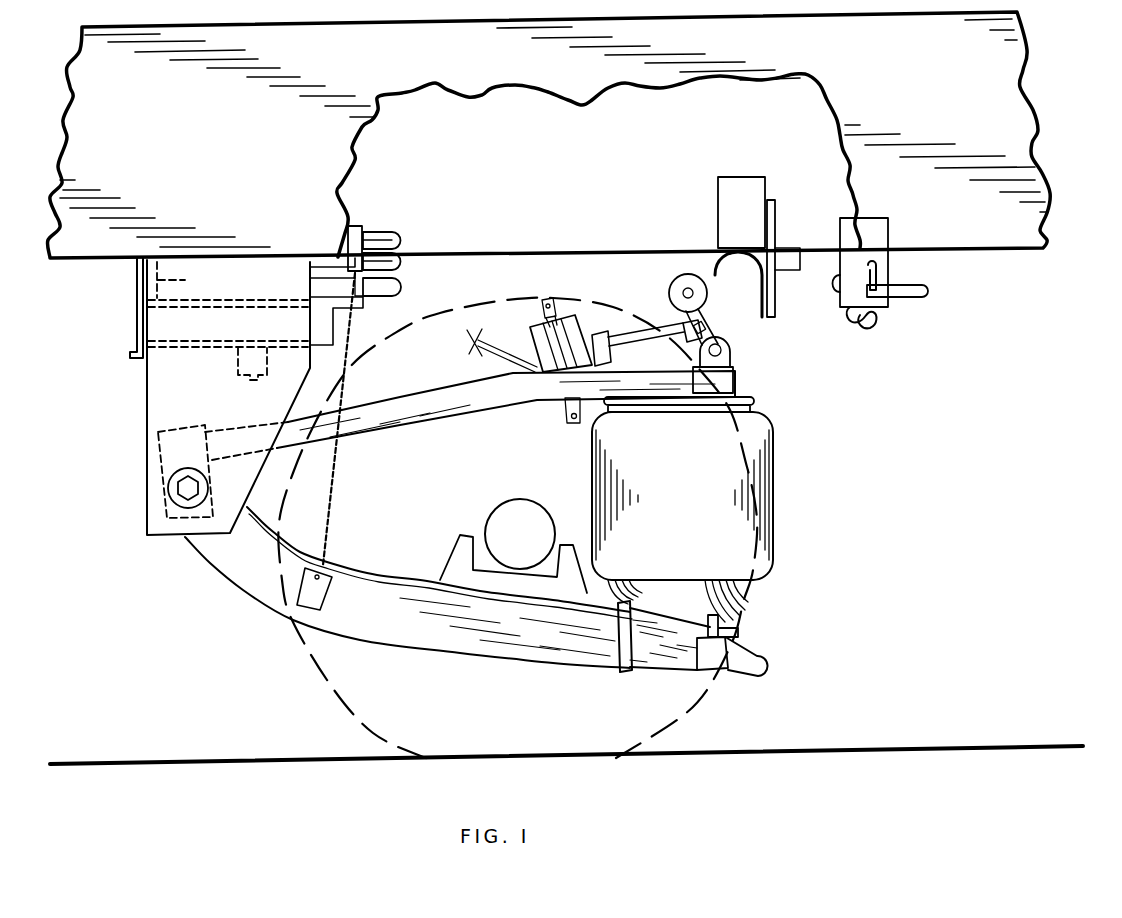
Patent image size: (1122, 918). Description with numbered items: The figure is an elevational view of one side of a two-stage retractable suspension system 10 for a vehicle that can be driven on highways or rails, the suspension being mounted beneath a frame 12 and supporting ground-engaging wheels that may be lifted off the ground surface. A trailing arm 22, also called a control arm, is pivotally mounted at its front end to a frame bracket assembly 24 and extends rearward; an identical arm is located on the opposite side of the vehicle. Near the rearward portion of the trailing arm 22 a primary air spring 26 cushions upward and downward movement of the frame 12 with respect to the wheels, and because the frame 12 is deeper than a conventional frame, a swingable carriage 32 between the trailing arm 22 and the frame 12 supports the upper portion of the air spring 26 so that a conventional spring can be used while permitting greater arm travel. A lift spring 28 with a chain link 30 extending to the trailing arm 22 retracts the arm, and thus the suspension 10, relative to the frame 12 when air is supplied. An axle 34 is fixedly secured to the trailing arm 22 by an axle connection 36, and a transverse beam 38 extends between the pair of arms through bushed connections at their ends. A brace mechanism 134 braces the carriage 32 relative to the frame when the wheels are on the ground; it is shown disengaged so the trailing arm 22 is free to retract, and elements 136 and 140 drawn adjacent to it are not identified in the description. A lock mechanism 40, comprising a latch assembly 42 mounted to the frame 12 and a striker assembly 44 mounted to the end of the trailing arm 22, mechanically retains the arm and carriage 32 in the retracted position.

The two-stage retractable suspension system 10 is at (438, 661).
The frame 12 is at (983, 77).
The trailing arms 22 is at (533, 640).
The frame bracket assembly 24 is at (136, 469).
The primary air springs 26 is at (708, 455).
The lift spring 28 is at (412, 271).
The chain link 30 is at (340, 395).
The swingable carriage 32 is at (518, 413).
The axle 34 is at (520, 517).
The axle connection 36 is at (463, 557).
The transverse beam 38 is at (664, 645).
The lock mechanism 40 is at (894, 314).
The latch assembly 42 is at (870, 325).
The striker assembly 44 is at (758, 658).
The brace mechanism 134 is at (737, 341).
The actuator cylinder 136 is at (680, 315).
The roller 140 is at (669, 281).